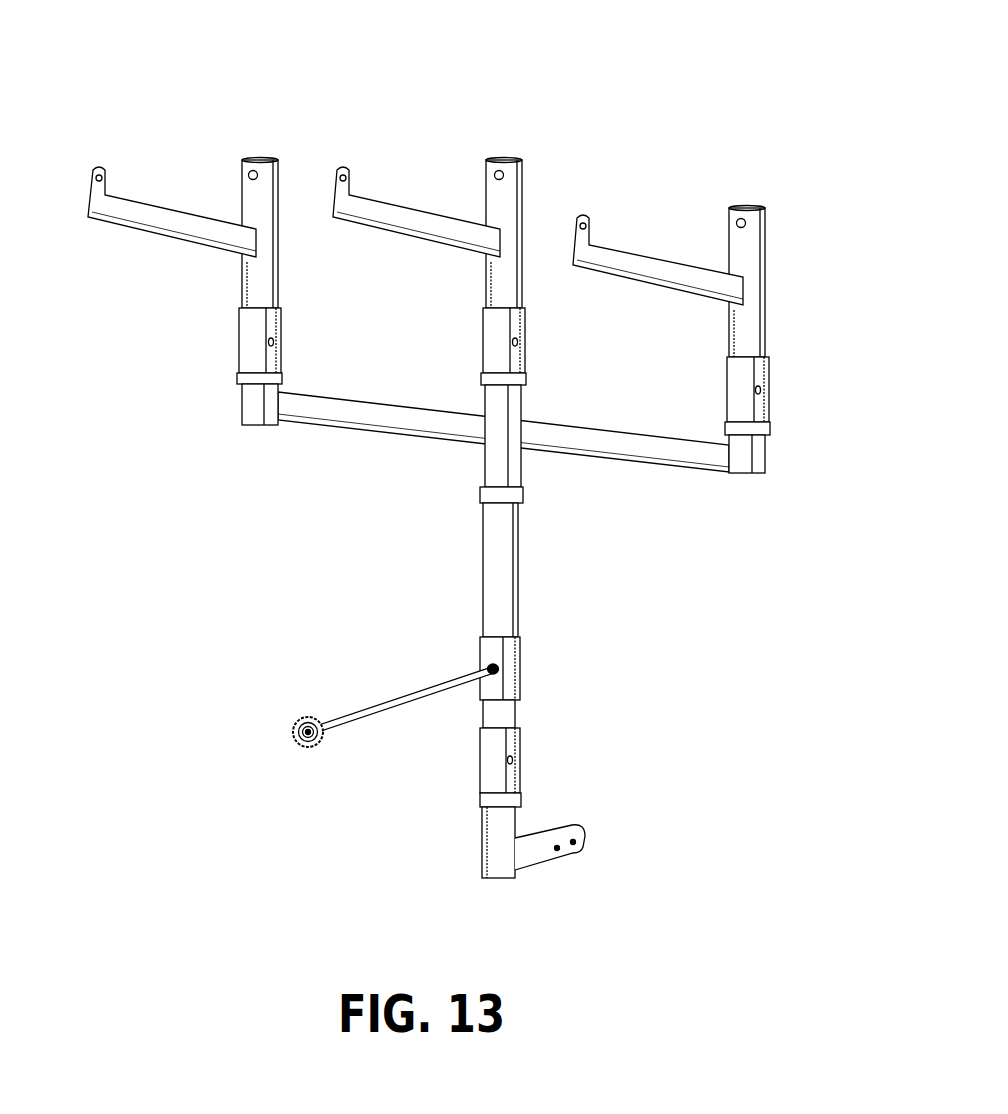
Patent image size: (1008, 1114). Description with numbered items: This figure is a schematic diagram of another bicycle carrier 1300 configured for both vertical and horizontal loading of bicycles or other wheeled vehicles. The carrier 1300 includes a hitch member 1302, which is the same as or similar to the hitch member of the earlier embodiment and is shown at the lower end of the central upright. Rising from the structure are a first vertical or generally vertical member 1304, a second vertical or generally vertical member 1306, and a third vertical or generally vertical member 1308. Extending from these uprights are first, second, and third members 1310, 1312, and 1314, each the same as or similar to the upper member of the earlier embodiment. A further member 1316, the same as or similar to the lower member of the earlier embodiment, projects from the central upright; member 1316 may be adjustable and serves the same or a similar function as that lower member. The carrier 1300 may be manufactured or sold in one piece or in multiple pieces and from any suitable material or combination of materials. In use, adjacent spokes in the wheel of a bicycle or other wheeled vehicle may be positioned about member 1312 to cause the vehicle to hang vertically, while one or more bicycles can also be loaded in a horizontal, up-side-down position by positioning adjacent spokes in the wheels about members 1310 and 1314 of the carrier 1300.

The bicycle carrier 1300 is at (152, 67).
The hitch member 1302 is at (542, 835).
The first vertical member 1304 is at (522, 160).
The second vertical member 1306 is at (270, 158).
The third vertical member 1308 is at (763, 208).
The first member 1310 is at (177, 228).
The second member 1312 is at (443, 237).
The third member 1314 is at (692, 290).
The member 1316 is at (435, 678).